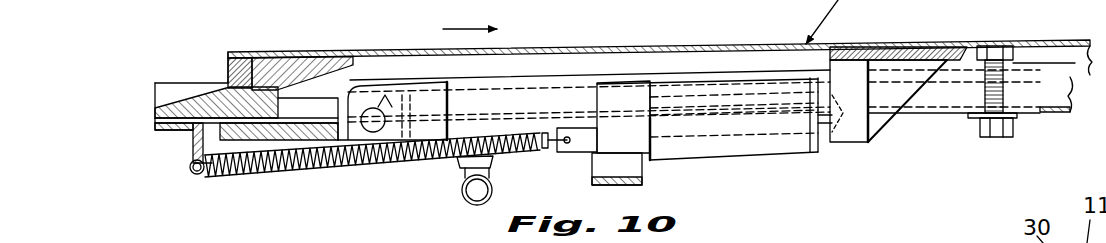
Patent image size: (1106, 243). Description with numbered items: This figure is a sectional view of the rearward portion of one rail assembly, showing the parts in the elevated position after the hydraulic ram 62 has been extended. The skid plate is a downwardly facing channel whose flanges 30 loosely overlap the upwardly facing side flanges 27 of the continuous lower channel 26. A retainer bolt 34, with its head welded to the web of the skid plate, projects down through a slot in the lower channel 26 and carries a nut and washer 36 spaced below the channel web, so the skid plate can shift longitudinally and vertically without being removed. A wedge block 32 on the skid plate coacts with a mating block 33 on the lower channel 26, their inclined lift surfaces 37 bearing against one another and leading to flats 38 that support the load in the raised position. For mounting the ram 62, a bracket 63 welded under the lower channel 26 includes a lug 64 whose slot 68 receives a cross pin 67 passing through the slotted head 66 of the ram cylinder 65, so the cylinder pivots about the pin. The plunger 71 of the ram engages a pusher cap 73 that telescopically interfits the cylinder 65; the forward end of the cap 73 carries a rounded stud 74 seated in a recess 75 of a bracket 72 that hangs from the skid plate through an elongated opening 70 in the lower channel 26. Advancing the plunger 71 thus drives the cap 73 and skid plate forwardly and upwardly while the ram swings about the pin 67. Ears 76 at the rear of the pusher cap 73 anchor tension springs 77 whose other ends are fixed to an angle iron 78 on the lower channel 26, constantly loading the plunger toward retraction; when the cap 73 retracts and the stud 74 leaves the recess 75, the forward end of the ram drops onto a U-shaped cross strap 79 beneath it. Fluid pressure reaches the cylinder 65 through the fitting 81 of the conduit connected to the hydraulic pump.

The flanges 30 is at (1062, 44).
The flats 38 is at (252, 76).
The wedge block 32 is at (295, 70).
The inclined lift surface 37 is at (197, 83).
The mating block 33 is at (156, 116).
The angle iron 78 is at (195, 148).
The lug 64 is at (273, 146).
The bracket 63 is at (250, 152).
The ram cylinder 65 is at (522, 95).
The slotted head 66 is at (430, 92).
The cross pin 67 is at (372, 118).
The slot 68 is at (385, 98).
The hydraulic ram 62 is at (556, 82).
The tension spring 77 is at (437, 160).
The fitting 81 is at (475, 190).
The ears 76 is at (578, 143).
The U-shaped cross strap 79 is at (630, 171).
The plunger 71 is at (734, 137).
The pusher cap 73 is at (778, 155).
The rounded stud 74 is at (827, 127).
The recess 75 is at (848, 132).
The elongated opening 70 is at (950, 113).
The bracket 72 is at (883, 120).
The retainer bolt 34 is at (985, 93).
The nut and washer 36 is at (998, 134).
The side flanges 27 is at (1060, 95).
The lower channel 26 is at (1057, 115).